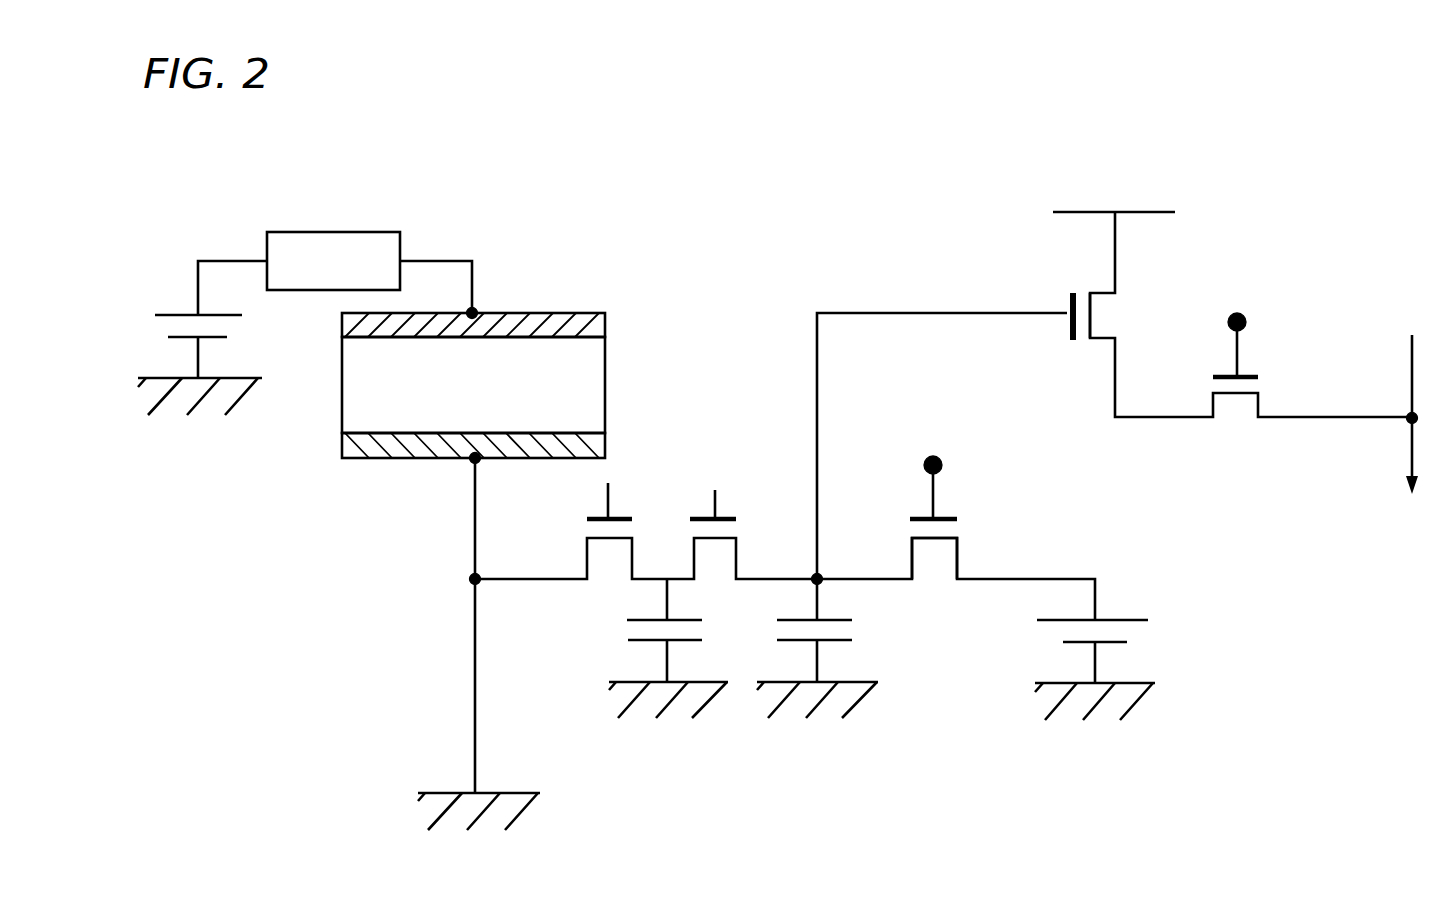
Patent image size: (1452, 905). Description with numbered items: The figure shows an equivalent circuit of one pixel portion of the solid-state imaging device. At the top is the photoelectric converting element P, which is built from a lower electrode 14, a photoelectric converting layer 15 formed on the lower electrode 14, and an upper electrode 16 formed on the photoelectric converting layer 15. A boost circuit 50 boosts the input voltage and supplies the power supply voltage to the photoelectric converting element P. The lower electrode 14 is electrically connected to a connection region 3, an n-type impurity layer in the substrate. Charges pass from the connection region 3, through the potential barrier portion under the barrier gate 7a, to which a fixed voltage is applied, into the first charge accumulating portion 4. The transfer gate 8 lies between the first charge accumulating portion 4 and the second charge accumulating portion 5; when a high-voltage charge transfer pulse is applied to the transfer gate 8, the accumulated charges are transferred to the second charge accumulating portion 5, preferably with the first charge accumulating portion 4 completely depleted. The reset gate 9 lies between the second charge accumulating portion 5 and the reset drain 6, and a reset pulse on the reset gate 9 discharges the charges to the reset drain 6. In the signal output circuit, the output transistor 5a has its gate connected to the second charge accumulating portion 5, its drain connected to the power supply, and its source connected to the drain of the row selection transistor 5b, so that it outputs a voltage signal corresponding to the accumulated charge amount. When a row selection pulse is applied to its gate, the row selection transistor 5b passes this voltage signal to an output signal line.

The photoelectric converting element P is at (603, 243).
The boost circuit 50 is at (398, 234).
The upper electrode 16 is at (536, 320).
The photoelectric converting layer 15 is at (583, 370).
The lower electrode 14 is at (592, 462).
The connection region 3 is at (477, 578).
The barrier gate 7a is at (600, 517).
The transfer gate 8 is at (726, 518).
The reset gate 9 is at (922, 517).
The reset drain 6 is at (973, 573).
The first charge accumulating portion 4 is at (656, 640).
The second charge accumulating portion 5 is at (843, 640).
The output transistor 5a is at (1128, 303).
The row selection transistor 5b is at (1265, 365).